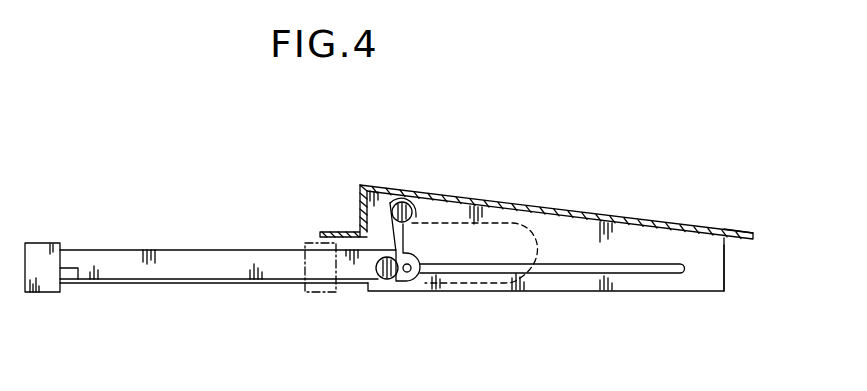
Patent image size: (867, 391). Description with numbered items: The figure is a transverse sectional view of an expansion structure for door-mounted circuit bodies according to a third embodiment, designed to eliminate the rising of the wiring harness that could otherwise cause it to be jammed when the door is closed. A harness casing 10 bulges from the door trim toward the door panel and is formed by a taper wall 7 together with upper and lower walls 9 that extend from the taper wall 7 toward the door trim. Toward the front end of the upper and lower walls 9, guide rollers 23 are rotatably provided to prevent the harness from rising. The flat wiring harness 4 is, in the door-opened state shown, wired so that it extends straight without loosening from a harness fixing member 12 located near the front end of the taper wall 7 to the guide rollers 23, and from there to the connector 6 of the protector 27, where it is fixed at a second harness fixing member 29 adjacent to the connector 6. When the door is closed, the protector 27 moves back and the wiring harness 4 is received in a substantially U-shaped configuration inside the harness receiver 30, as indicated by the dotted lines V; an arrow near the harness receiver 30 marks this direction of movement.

The flat wiring harness 4 is at (737, 242).
The connector 6 is at (45, 285).
The taper wall 7 is at (611, 213).
The upper and lower walls 9 is at (673, 292).
The harness casing 10 is at (728, 278).
The harness fixing member 12 is at (412, 201).
The guide rollers 23 is at (375, 287).
The protector 27 is at (240, 248).
The harness fixing member 29 is at (68, 283).
The harness receiver 30 is at (477, 178).
The dotted lines V is at (520, 203).